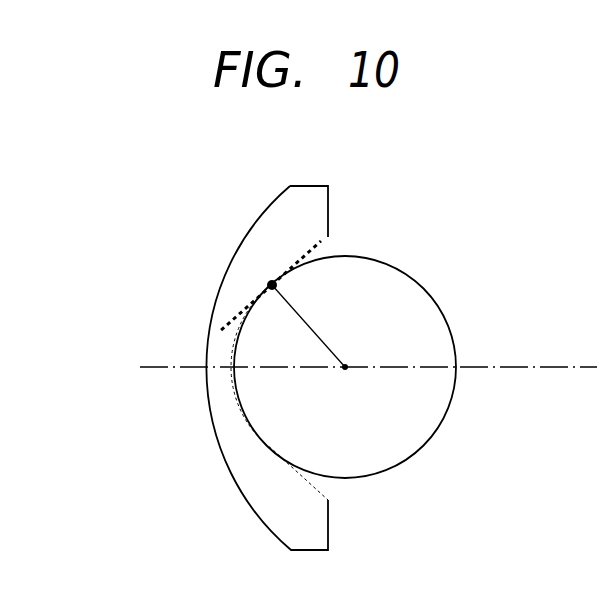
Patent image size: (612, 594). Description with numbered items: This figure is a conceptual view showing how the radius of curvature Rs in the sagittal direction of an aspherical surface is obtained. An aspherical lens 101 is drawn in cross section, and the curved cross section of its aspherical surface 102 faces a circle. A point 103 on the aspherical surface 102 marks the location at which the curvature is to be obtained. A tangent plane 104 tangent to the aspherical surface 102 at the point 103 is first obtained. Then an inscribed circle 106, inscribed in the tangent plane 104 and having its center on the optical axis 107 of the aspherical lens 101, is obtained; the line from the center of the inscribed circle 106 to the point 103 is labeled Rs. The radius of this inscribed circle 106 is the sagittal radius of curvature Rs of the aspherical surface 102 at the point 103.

The aspherical lens 101 is at (327, 185).
The aspherical surface 102 is at (330, 241).
The point 103 is at (270, 281).
The tangent plane 104 is at (240, 308).
The inscribed circle 106 is at (433, 433).
The optical axis 107 is at (545, 365).